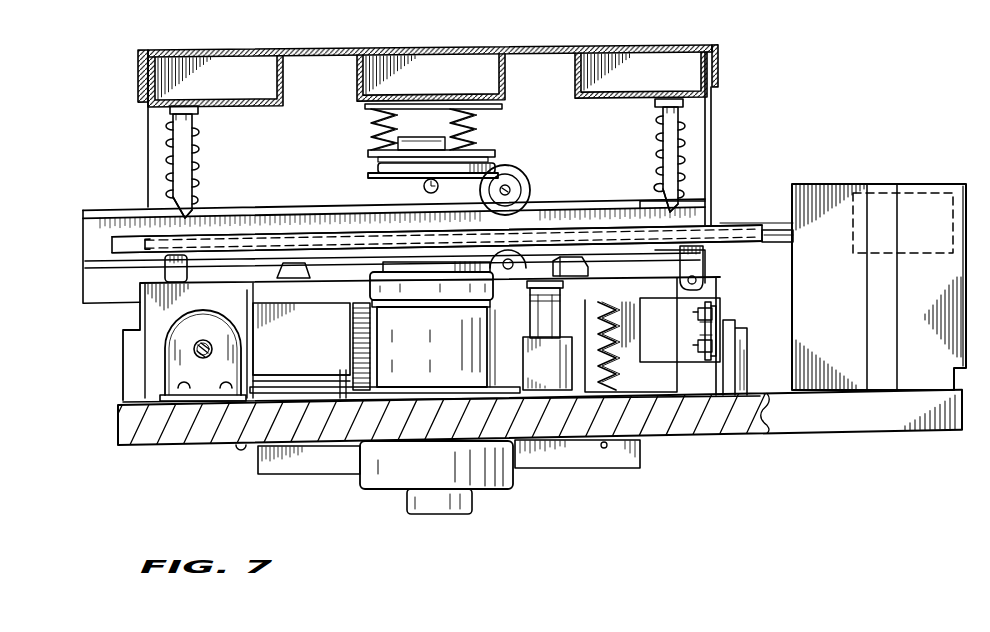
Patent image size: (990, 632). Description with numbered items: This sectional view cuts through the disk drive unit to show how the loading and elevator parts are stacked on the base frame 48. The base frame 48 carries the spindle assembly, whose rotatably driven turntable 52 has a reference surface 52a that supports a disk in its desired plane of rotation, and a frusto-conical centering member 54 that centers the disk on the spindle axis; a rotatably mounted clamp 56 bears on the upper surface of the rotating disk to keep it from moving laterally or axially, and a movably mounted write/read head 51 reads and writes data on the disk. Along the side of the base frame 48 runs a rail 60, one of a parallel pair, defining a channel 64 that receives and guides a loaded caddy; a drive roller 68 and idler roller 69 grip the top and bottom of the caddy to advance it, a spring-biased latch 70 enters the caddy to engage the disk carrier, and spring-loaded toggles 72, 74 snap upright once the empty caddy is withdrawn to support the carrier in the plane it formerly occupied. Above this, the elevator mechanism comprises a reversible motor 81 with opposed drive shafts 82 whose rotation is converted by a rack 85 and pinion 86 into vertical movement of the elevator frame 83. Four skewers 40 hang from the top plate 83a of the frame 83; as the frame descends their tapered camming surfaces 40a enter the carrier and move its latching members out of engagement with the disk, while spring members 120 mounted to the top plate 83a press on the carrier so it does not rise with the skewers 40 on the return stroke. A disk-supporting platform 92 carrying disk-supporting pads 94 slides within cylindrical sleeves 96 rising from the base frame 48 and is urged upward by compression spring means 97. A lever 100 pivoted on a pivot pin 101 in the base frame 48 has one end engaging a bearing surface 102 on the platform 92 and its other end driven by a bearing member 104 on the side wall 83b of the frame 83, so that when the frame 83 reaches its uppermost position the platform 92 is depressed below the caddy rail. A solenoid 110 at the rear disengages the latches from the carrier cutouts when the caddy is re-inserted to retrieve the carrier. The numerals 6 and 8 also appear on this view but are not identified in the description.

The guide bar 6 is at (213, 239).
The rod 8 is at (110, 245).
The disk-releasing skewer 40 is at (436, 158).
The tapered camming surface 40a is at (154, 205).
The base frame 48 is at (118, 426).
The write/read head 51 is at (558, 289).
The turntable 52 is at (407, 324).
The reference surface 52a is at (372, 268).
The frusto-conical centering member 54 is at (410, 182).
The clamp 56 is at (372, 167).
The rail 60 is at (410, 231).
The channel 64 is at (86, 232).
The drive roller 68 is at (518, 176).
The idler roller 69 is at (522, 250).
The spring-biased latch 70 is at (778, 230).
The spring-loaded toggle 72 is at (163, 272).
The spring-loaded toggle 74 is at (703, 250).
The reversible motor 81 is at (168, 341).
The drive shaft 82 is at (208, 342).
The elevator frame 83 is at (440, 116).
The top plate 83a is at (651, 49).
The side wall 83b is at (148, 132).
The rack 85 is at (352, 322).
The pinion 86 is at (352, 347).
The disk-supporting platform 92 is at (658, 240).
The disk-supporting pad 94 is at (286, 262).
The cylindrical sleeve 96 is at (587, 378).
The compression spring means 97 is at (606, 306).
The lever 100 is at (700, 352).
The pivot pin 101 is at (123, 333).
The bearing surface 102 is at (723, 364).
The bearing member 104 is at (695, 322).
The solenoid 110 is at (925, 192).
The spring member 120 is at (200, 168).